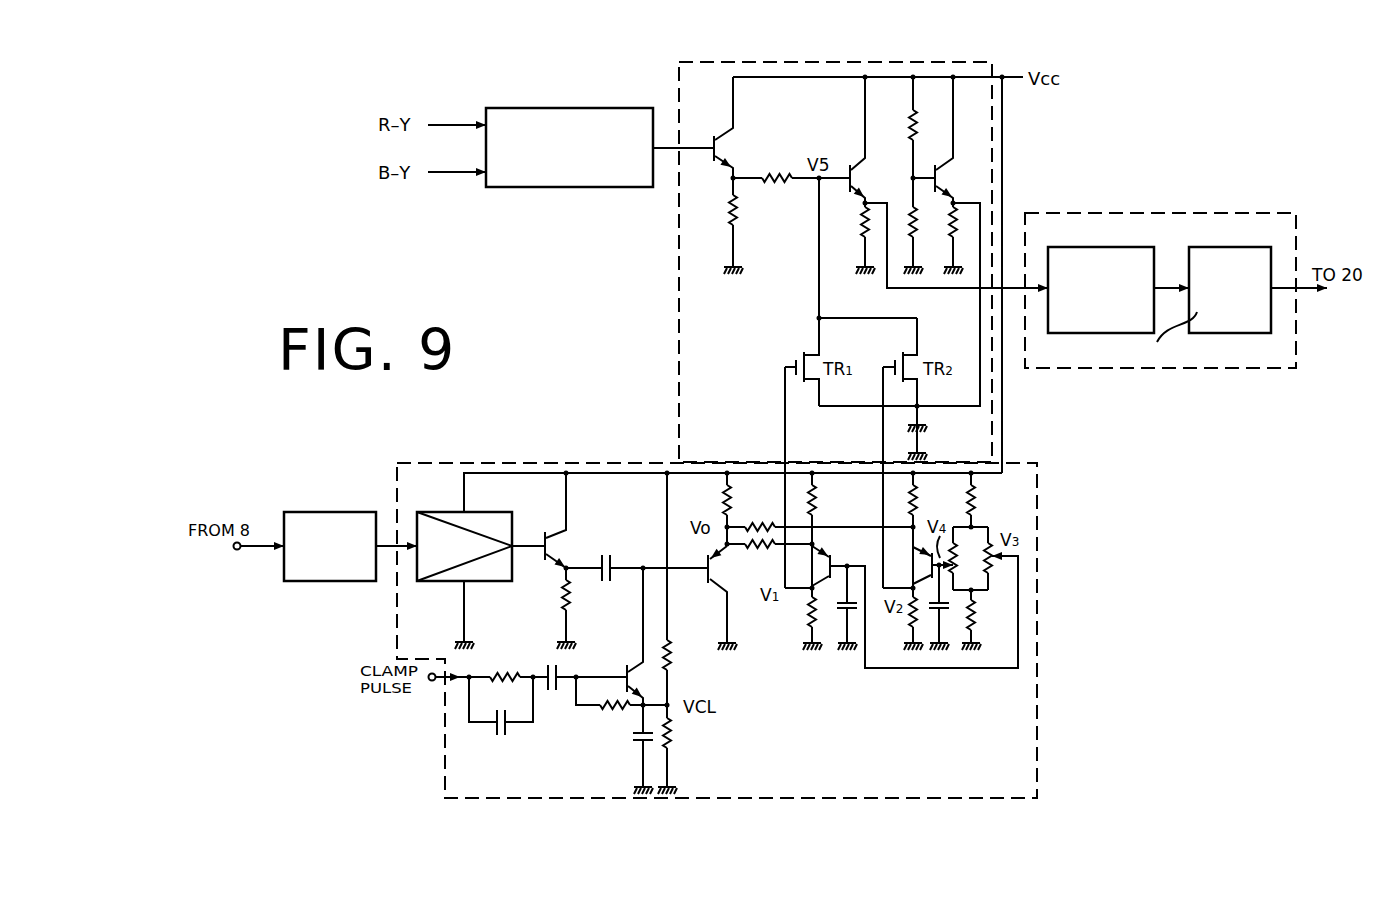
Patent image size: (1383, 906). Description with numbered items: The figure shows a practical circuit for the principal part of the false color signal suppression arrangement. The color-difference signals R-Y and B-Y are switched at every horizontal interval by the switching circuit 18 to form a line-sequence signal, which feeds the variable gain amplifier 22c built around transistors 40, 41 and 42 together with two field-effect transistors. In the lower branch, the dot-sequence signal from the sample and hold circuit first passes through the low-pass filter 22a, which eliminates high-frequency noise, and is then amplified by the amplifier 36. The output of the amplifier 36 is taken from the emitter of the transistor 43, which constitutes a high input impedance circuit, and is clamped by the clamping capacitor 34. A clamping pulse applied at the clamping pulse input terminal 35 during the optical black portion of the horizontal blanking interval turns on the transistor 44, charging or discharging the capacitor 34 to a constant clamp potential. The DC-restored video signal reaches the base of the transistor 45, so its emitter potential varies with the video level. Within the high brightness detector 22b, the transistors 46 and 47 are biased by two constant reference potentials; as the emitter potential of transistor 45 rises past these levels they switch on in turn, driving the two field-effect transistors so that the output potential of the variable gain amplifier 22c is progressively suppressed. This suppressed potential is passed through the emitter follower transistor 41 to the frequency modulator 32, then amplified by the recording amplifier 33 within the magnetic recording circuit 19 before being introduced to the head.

The switching circuit 18 is at (571, 108).
The magnetic recording circuit 19 is at (1296, 228).
The low-pass filter 22a is at (303, 512).
The high brightness detector 22b is at (1037, 700).
The variable gain amplifier 22c is at (985, 62).
The frequency modulator 32 is at (1085, 225).
The recording amplifier 33 is at (1217, 225).
The clamping capacitor 34 is at (606, 581).
The clamping pulse input terminal 35 is at (432, 681).
The amplifier 36 is at (237, 550).
The transistor 40 is at (712, 142).
The transistor 41 is at (848, 167).
The transistor 42 is at (934, 167).
The transistor 43 is at (555, 537).
The transistor 44 is at (624, 667).
The transistor 45 is at (708, 584).
The transistor 46 is at (834, 561).
The transistor 47 is at (930, 566).